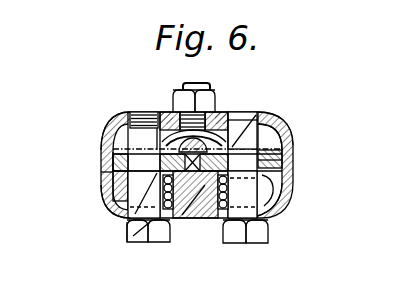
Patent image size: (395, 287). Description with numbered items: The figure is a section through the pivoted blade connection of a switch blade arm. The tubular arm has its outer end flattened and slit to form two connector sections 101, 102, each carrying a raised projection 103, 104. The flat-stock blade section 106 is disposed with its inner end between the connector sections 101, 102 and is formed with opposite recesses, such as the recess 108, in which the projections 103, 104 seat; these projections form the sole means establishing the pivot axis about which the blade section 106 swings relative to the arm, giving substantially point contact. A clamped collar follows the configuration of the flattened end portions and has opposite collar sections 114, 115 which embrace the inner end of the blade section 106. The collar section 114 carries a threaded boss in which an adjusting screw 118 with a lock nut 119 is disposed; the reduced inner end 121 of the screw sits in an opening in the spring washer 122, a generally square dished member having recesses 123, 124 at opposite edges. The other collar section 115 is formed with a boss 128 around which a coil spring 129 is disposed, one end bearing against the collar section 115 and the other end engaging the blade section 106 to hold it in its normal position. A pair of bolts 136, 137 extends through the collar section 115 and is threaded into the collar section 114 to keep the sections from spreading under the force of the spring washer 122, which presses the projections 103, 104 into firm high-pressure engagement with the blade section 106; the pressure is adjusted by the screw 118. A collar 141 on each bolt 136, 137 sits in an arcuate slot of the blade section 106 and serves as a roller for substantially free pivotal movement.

The connector section 101 is at (112, 155).
The connector section 102 is at (290, 154).
The projection 103 is at (286, 134).
The projection 104 is at (181, 220).
The blade section 106 is at (110, 202).
The recess 108 is at (287, 185).
The collar section 114 is at (104, 134).
The collar section 115 is at (218, 224).
The adjusting screw 118 is at (214, 88).
The lock nut 119 is at (216, 100).
The reduced inner end of screw 121 is at (171, 113).
The spring washer 122 is at (258, 114).
The recess 123 is at (150, 118).
The recess 124 is at (113, 120).
The boss 128 is at (148, 244).
The coil spring 129 is at (133, 243).
The bolt 136 is at (124, 220).
The bolt 137 is at (280, 213).
The collar 141 is at (102, 178).